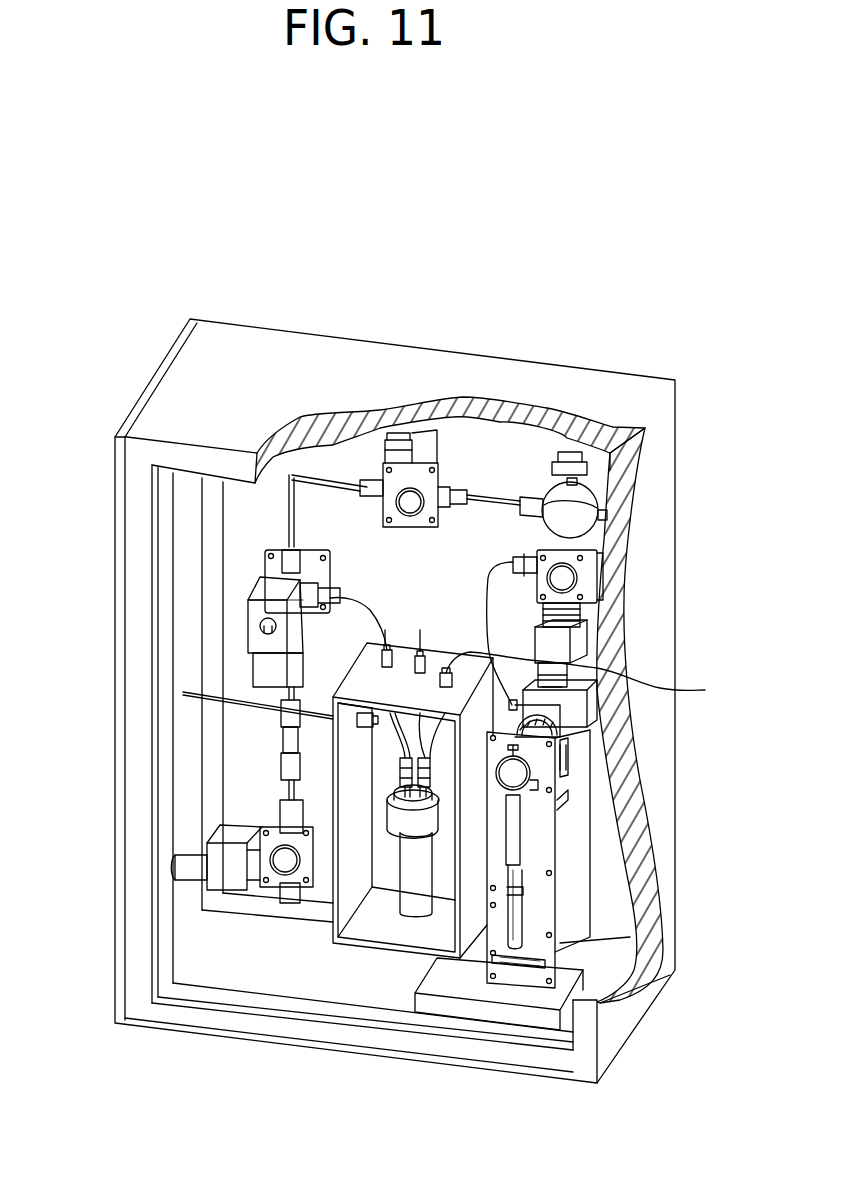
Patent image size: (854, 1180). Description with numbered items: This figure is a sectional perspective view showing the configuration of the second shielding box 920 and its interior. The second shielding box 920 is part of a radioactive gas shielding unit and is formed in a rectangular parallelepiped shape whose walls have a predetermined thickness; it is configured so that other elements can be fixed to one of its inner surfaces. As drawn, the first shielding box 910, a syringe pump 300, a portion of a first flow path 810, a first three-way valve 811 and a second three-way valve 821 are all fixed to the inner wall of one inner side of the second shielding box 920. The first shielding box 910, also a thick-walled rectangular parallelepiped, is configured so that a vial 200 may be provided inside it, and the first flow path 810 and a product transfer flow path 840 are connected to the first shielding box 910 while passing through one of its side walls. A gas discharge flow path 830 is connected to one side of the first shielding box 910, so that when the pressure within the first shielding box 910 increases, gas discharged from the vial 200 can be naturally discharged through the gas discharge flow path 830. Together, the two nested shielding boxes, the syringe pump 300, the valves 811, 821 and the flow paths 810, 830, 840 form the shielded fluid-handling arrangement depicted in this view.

The vial 200 is at (488, 493).
The syringe pump 300 is at (578, 818).
The first flow path 810 is at (420, 656).
The first 3-way valve 811 is at (577, 578).
The second 3-way valve 821 is at (250, 603).
The gas discharge flow path 830 is at (214, 692).
The product transfer flow path 840 is at (598, 721).
The first shielding box 910 is at (333, 933).
The second shielding box 920 is at (600, 1015).